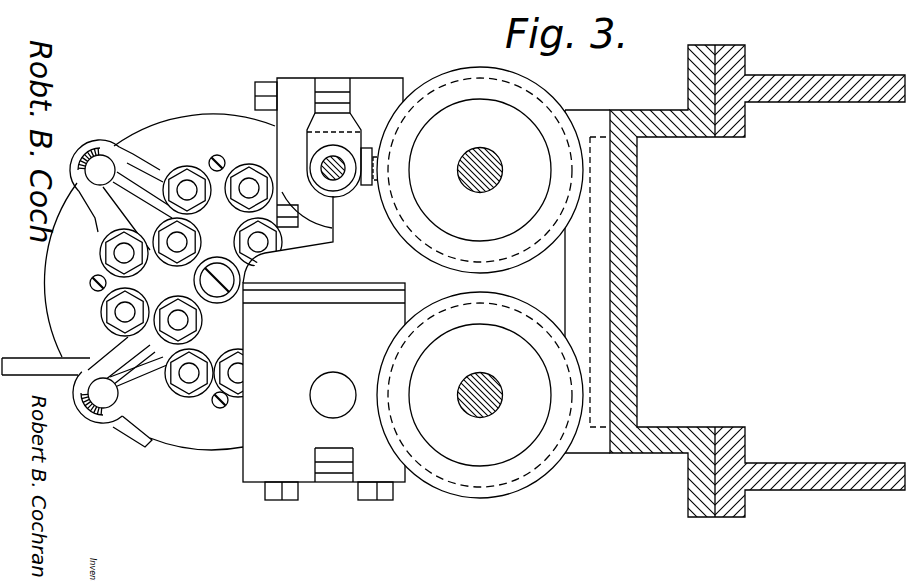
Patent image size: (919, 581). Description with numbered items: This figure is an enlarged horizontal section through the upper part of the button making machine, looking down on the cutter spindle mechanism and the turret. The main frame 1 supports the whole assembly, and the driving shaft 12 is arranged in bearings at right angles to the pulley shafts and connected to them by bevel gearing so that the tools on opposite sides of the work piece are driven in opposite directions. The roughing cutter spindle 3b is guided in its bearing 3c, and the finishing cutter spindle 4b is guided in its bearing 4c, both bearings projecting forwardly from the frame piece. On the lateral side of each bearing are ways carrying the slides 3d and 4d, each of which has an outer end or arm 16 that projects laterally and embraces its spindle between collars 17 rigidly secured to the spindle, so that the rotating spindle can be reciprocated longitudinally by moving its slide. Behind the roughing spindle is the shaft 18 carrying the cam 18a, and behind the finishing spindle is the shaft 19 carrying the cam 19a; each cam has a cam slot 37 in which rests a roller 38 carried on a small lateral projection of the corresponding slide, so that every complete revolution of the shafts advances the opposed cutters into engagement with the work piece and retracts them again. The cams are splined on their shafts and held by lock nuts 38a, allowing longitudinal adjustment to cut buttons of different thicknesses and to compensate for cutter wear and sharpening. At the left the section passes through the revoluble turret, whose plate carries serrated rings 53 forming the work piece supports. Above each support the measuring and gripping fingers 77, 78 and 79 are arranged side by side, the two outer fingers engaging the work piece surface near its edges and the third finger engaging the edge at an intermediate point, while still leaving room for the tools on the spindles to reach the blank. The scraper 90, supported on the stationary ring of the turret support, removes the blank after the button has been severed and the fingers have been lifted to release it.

The main frame 1 is at (826, 473).
The driving shaft 12 is at (633, 334).
The arm of slide 16 is at (323, 142).
The collars 17 is at (338, 186).
The cam shaft 18 is at (481, 186).
The cam 18a is at (480, 179).
The cam shaft 19 is at (485, 412).
The cam 19a is at (480, 403).
The cam slot 37 is at (413, 235).
The roller 38 is at (382, 380).
The lock nuts 38a is at (480, 282).
The cutter spindle 3b is at (327, 178).
The bearing 3c is at (323, 180).
The slide 3d is at (333, 122).
The cutter spindle 4b is at (318, 390).
The bearing 4c is at (324, 391).
The slide 4d is at (337, 452).
The serrated rings 53 is at (97, 152).
The gripping finger 77 is at (152, 160).
The gripping finger 78 is at (140, 280).
The gripping finger 79 is at (108, 216).
The scraper 90 is at (47, 366).